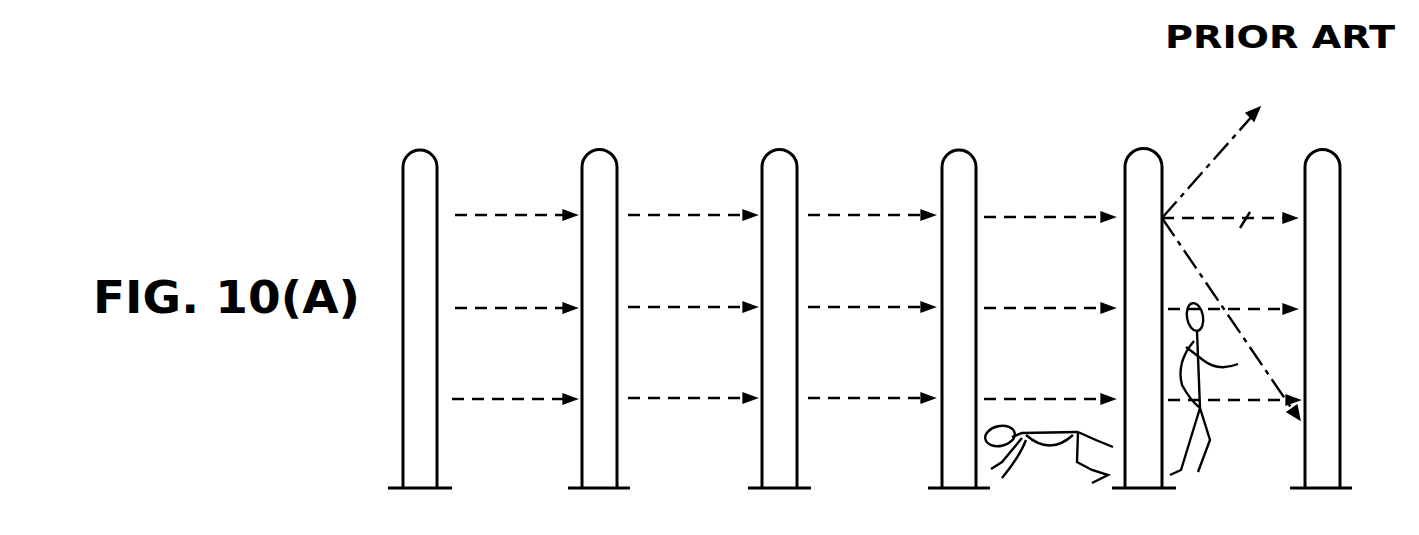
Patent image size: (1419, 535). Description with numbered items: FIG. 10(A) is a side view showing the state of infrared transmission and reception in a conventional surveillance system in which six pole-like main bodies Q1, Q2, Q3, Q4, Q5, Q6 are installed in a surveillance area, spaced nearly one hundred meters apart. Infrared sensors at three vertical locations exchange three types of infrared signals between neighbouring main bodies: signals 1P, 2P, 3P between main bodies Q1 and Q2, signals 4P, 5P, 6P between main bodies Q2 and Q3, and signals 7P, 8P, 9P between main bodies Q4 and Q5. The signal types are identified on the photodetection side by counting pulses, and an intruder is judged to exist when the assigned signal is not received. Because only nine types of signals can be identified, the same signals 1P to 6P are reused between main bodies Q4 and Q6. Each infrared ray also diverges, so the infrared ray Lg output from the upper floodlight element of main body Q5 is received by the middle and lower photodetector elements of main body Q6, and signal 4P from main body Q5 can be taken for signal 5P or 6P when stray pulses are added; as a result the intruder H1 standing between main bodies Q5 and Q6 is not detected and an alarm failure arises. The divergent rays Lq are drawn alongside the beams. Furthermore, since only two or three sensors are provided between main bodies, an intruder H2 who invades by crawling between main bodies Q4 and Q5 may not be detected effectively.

The pole-like main body Q1 is at (420, 298).
The pole-like main body Q2 is at (599, 298).
The pole-like main body Q3 is at (779, 298).
The pole-like main body Q4 is at (959, 298).
The pole-like main body Q5 is at (1144, 298).
The pole-like main body Q6 is at (1321, 298).
The infrared signal 1P is at (785, 198).
The infrared signal 2P is at (785, 290).
The infrared signal 3P is at (783, 382).
The infrared signal 4P is at (962, 199).
The infrared signal 5P is at (962, 291).
The infrared signal 6P is at (964, 397).
The infrared signal 7P is at (871, 197).
The infrared signal 8P is at (871, 290).
The infrared signal 9P is at (871, 383).
The stray light beam Lq is at (522, 400).
The infrared ray Lg is at (1249, 222).
The intruder H1 is at (1218, 435).
The intruder H2 is at (1050, 462).